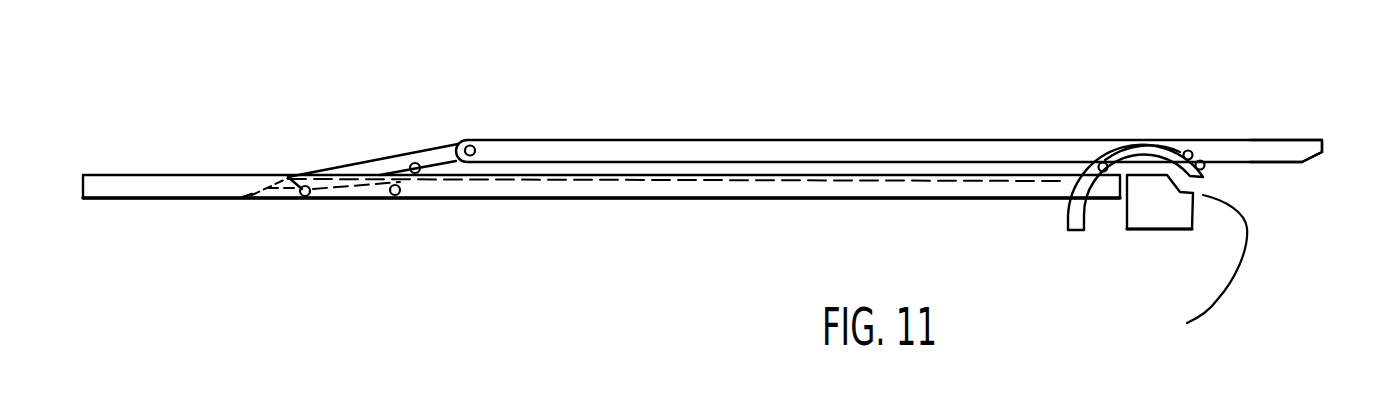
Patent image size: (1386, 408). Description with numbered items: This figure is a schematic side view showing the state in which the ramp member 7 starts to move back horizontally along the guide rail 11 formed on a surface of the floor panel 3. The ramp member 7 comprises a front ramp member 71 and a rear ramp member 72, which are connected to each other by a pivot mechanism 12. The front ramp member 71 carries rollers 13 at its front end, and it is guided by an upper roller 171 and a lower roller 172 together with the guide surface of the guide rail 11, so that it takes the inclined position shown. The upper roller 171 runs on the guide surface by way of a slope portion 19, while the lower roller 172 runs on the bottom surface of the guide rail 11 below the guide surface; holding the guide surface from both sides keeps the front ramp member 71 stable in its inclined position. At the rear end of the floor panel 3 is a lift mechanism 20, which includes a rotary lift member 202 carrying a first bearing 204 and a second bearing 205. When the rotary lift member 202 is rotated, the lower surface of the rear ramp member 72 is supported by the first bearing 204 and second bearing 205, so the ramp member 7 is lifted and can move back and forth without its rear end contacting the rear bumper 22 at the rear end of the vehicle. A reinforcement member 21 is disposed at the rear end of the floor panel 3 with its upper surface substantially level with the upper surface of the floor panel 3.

The floor panel 3 is at (207, 174).
The ramp member 7 is at (637, 124).
The guide rail 11 is at (720, 187).
The pivot mechanism 12 is at (471, 146).
The rollers 13 is at (307, 196).
The slope portion 19 is at (270, 203).
The lift mechanism 20 is at (1102, 220).
The reinforcement member 21 is at (1183, 207).
The rear bumper 22 is at (1235, 282).
The front ramp member 71 is at (380, 157).
The rear ramp member 72 is at (1263, 147).
The upper roller 171 is at (420, 173).
The lower roller 172 is at (396, 195).
The rotary lift member 202 is at (1140, 148).
The first bearing 204 is at (1100, 161).
The second bearing 205 is at (1203, 159).